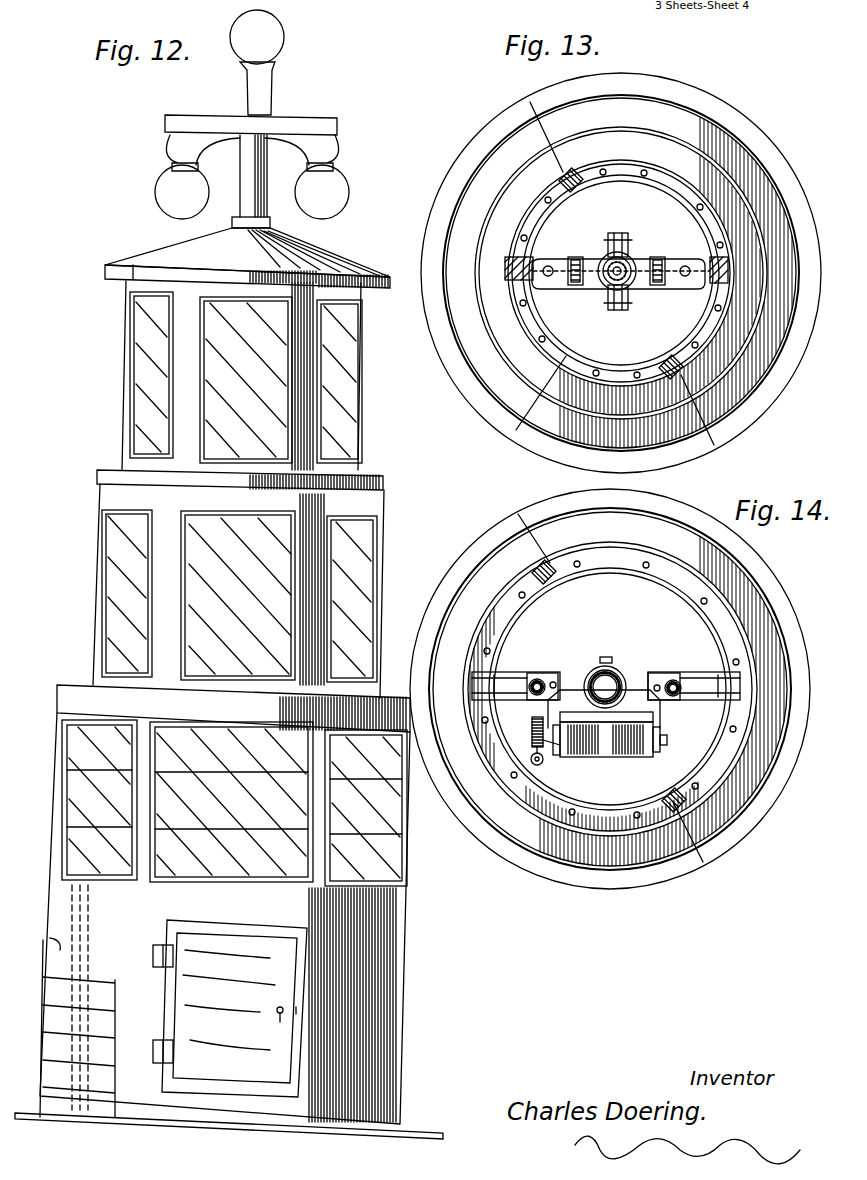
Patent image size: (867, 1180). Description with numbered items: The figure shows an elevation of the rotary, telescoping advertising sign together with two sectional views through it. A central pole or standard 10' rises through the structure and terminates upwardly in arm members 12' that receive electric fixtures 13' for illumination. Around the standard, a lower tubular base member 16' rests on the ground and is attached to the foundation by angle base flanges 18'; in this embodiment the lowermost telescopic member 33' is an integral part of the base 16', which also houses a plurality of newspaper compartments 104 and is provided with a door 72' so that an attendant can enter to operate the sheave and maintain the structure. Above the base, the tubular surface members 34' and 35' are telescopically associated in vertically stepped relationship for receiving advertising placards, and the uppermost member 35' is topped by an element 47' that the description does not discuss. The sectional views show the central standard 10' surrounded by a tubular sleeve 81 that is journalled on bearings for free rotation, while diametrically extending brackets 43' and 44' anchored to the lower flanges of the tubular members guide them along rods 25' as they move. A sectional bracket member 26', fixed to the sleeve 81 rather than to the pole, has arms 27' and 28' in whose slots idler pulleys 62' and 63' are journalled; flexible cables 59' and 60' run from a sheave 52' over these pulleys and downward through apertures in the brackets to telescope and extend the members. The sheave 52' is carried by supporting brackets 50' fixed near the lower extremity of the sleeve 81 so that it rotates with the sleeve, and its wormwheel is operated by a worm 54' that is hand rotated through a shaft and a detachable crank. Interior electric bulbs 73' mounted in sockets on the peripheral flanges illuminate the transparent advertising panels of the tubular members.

In FIG. 12, the arm members 12' is at (271, 119).
In FIG. 12, the electric fixtures 13' is at (258, 184).
In FIG. 12, the roof 47' is at (247, 256).
In FIG. 12, the uppermost tubular surface member 35' is at (260, 385).
In FIG. 13, the uppermost tubular surface member 35' is at (615, 264).
In FIG. 12, the intermediate tubular surface member 34' is at (246, 608).
In FIG. 13, the intermediate tubular surface member 34' is at (621, 279).
In FIG. 14, the intermediate tubular surface member 34' is at (611, 689).
In FIG. 12, the lowermost tubular surface member 33' is at (253, 918).
In FIG. 13, the lowermost tubular surface member 33' is at (621, 273).
In FIG. 14, the lowermost tubular surface member 33' is at (610, 690).
In FIG. 12, the tubular base member 16' is at (386, 1005).
In FIG. 12, the angle base flanges 18' is at (234, 1109).
In FIG. 12, the door 72' is at (230, 1035).
In FIG. 12, the newspaper compartments 104 is at (52, 945).
In FIG. 13, the electric bulbs 73' is at (621, 243).
In FIG. 14, the electric bulbs 73' is at (610, 653).
In FIG. 13, the diametrical bracket 44' is at (589, 234).
In FIG. 13, the tubular sleeve 81 is at (602, 242).
In FIG. 14, the tubular sleeve 81 is at (593, 677).
In FIG. 13, the sectional bracket member 26' is at (621, 240).
In FIG. 13, the idler pulley 62' is at (562, 249).
In FIG. 13, the bracket arm 27' is at (585, 249).
In FIG. 13, the idler pulley 63' is at (660, 249).
In FIG. 13, the bracket arm 28' is at (673, 256).
In FIG. 13, the rods 25' is at (616, 295).
In FIG. 14, the rods 25' is at (591, 661).
In FIG. 13, the central pole or standard 10' is at (624, 294).
In FIG. 14, the central pole or standard 10' is at (614, 661).
In FIG. 14, the diametrical bracket 43' is at (635, 689).
In FIG. 14, the flexible cable 59' is at (551, 701).
In FIG. 14, the sheave supporting brackets 50' is at (604, 690).
In FIG. 14, the flexible cable 60' is at (665, 729).
In FIG. 14, the sheave 52' is at (610, 759).
In FIG. 14, the worm 54' is at (526, 778).